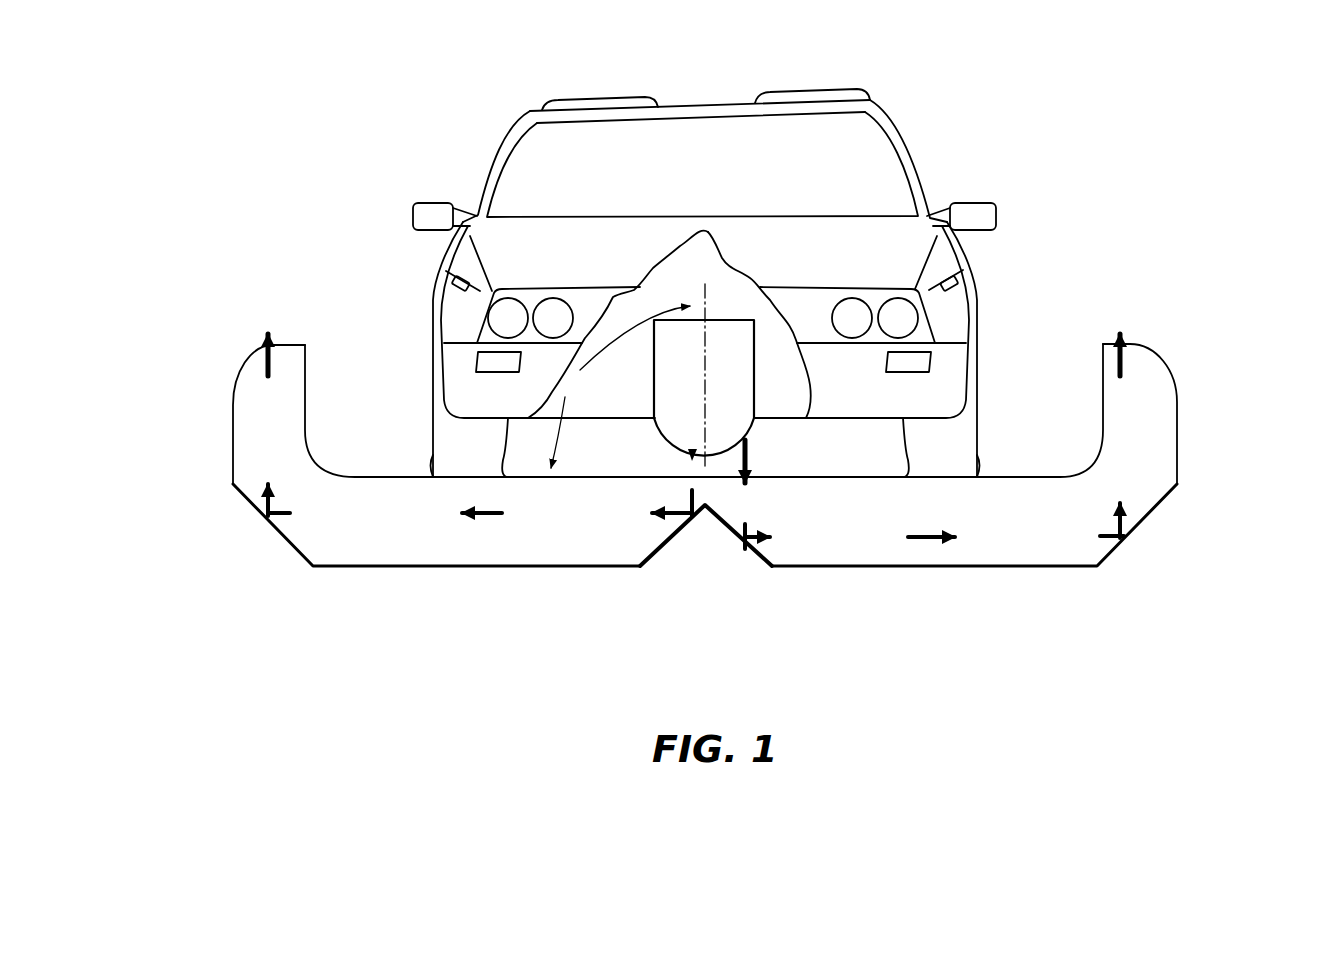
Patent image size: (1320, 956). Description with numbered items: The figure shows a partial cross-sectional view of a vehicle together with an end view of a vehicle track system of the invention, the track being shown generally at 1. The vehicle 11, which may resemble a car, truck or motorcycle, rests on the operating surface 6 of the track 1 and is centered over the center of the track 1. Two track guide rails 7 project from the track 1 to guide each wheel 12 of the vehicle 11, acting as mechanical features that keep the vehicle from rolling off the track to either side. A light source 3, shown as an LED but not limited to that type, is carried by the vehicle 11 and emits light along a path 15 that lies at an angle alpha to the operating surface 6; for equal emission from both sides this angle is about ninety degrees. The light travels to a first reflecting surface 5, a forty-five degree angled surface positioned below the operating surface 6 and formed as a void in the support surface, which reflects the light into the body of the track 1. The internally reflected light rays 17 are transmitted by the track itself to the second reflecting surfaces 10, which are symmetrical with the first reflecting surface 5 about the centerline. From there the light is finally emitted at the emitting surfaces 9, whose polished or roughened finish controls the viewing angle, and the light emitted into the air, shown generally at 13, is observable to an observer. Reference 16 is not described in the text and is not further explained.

The track 1 is at (736, 435).
The light source 3 is at (675, 531).
The first reflecting surface 5 is at (744, 526).
The operating surface 6 is at (418, 477).
The track guide rails 7 is at (305, 352).
The emitting surfaces 9 is at (268, 352).
The second reflecting surfaces 10 is at (300, 548).
The vehicle 11 is at (897, 127).
The wheel 12 is at (433, 383).
The emitted light 13 is at (253, 276).
The light path 15 is at (750, 456).
The inclined faces of V-section 16 is at (665, 515).
The internally reflected light rays 17 is at (255, 500).